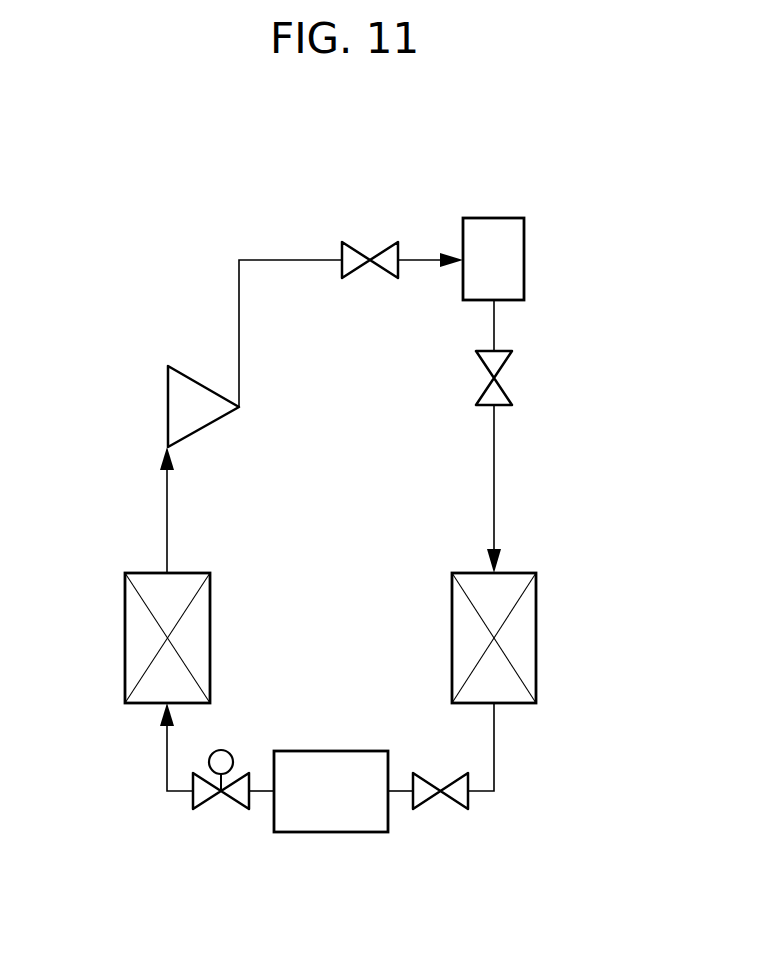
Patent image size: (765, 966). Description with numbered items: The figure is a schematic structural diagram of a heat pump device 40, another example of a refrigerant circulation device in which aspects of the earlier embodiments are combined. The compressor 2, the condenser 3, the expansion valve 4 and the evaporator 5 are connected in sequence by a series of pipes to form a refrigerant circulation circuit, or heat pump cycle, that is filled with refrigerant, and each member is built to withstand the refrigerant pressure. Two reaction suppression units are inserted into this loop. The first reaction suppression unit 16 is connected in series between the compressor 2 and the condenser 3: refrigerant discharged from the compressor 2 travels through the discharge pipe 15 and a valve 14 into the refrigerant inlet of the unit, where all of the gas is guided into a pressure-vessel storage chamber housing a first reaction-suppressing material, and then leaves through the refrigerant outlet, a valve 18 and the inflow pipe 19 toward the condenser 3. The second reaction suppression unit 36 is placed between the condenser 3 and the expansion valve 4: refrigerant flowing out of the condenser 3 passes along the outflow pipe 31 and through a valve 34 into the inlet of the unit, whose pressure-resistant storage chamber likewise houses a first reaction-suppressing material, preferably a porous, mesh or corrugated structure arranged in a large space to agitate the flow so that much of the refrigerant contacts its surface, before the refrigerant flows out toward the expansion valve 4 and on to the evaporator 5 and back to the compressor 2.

The heat pump device 40 is at (103, 166).
The compressor 2 is at (168, 411).
The condenser 3 is at (536, 632).
The expansion valve 4 is at (235, 809).
The evaporator 5 is at (125, 643).
The valve 14 is at (381, 248).
The discharge pipe 15 is at (289, 259).
The reaction suppression unit 16 is at (524, 260).
The valve 18 is at (510, 360).
The inflow pipe 19 is at (494, 472).
The outflow pipe 31 is at (494, 745).
The valve 34 is at (453, 809).
The reaction suppression unit 36 is at (335, 832).